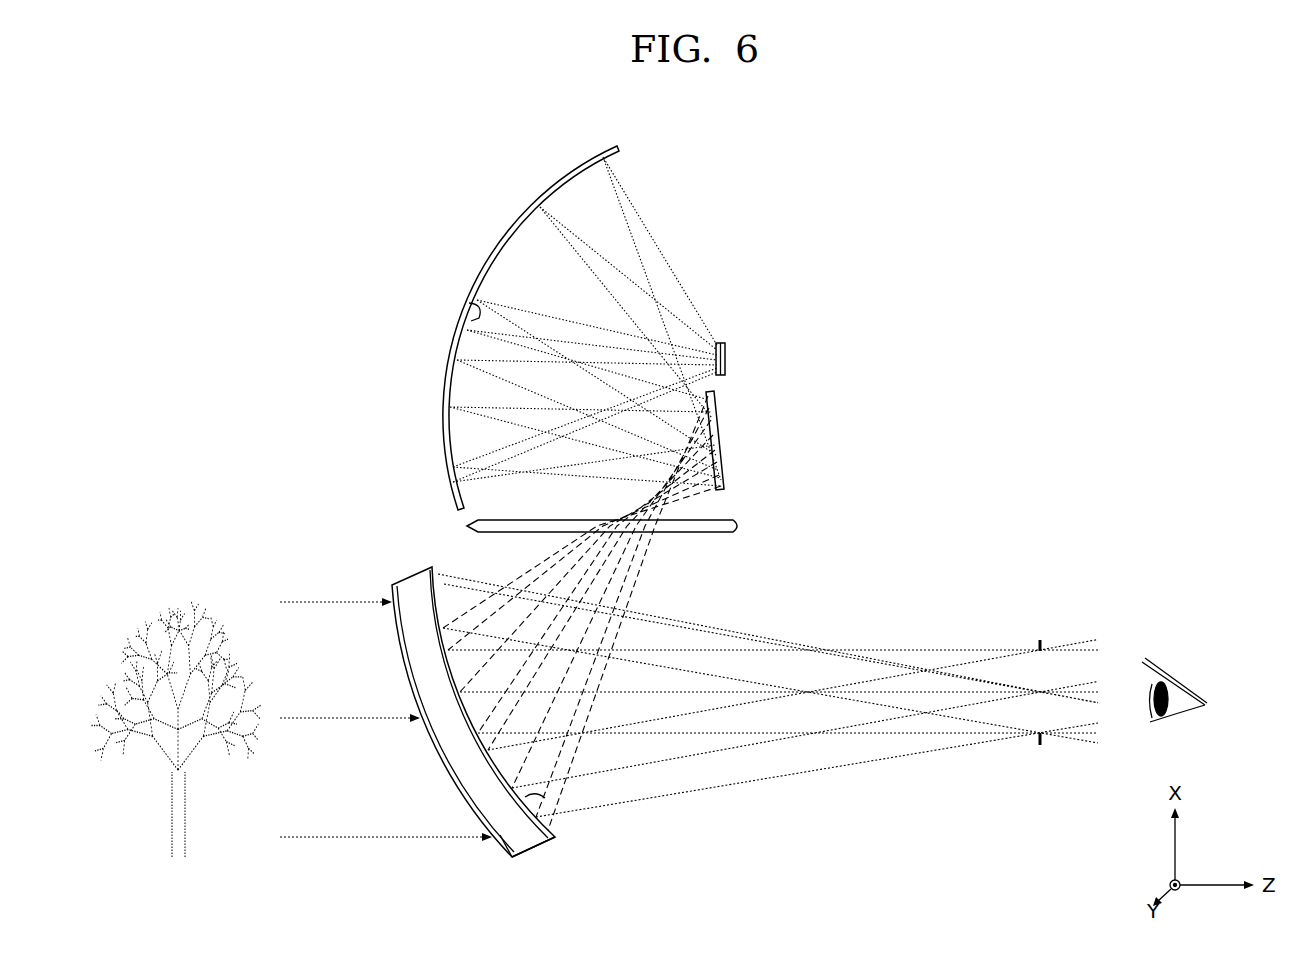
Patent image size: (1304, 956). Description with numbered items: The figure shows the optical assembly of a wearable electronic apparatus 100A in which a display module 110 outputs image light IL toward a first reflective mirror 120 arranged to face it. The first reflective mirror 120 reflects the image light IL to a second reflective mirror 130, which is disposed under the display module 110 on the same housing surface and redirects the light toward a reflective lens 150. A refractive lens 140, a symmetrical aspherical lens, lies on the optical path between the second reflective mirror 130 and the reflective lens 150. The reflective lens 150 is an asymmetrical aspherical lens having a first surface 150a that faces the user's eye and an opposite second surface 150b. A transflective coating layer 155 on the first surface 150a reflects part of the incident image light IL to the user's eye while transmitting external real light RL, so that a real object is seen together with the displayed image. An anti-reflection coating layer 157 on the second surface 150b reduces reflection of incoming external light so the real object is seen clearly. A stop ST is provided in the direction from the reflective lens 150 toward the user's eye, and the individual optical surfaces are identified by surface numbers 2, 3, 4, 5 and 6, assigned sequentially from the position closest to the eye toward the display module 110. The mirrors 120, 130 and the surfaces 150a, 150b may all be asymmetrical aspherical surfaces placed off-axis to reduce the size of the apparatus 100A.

The electronic apparatus 100A is at (896, 224).
The display module 110 is at (727, 356).
The first reflective mirror 120 is at (493, 246).
The second reflective mirror 130 is at (722, 445).
The refractive lens 140 is at (737, 526).
The reflective lens 150 is at (465, 706).
The transflective coating layer 155 is at (448, 578).
The anti-reflection coating layer 157 is at (402, 648).
The first surface 150a is at (540, 845).
The second surface 150b is at (514, 861).
The surface number 2 is at (538, 800).
The surface number 3 is at (715, 537).
The surface number 4 is at (735, 518).
The surface number 5 is at (720, 406).
The surface number 6 is at (468, 310).
The image light IL is at (658, 244).
The real light RL is at (386, 706).
The stop ST is at (1040, 640).